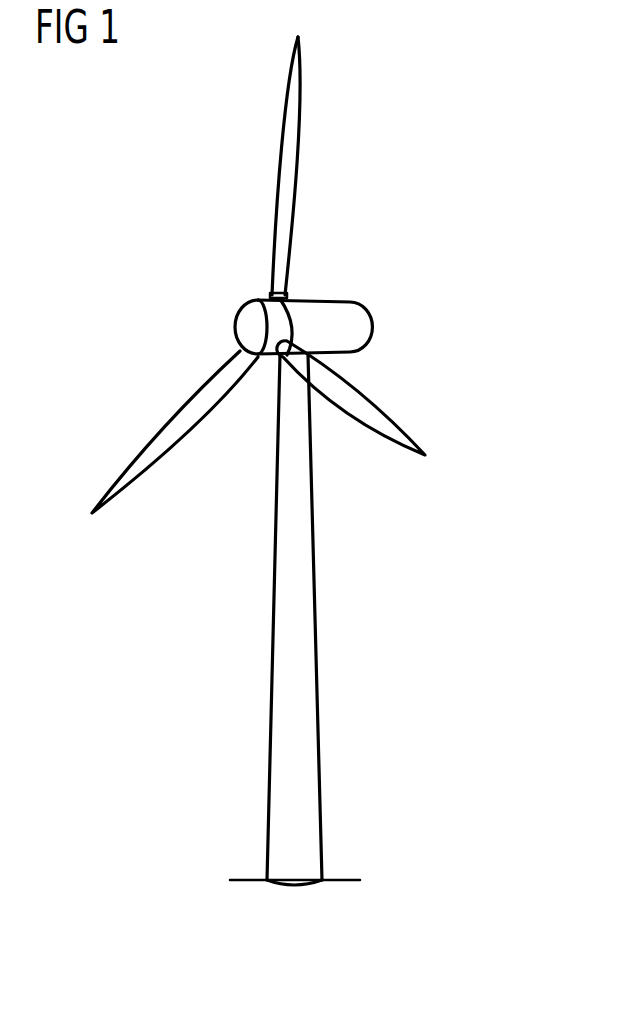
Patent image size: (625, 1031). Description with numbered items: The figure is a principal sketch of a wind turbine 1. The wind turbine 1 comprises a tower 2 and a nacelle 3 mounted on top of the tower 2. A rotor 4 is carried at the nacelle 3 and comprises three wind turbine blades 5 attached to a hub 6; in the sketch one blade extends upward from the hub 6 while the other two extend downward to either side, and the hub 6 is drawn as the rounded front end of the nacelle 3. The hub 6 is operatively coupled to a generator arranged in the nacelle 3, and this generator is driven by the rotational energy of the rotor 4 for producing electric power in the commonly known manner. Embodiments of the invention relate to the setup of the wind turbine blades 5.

The wind turbine 1 is at (443, 227).
The tower 2 is at (310, 690).
The nacelle 3 is at (360, 328).
The rotor 4 is at (238, 297).
The wind turbine blade 5 is at (290, 183).
The hub 6 is at (245, 333).